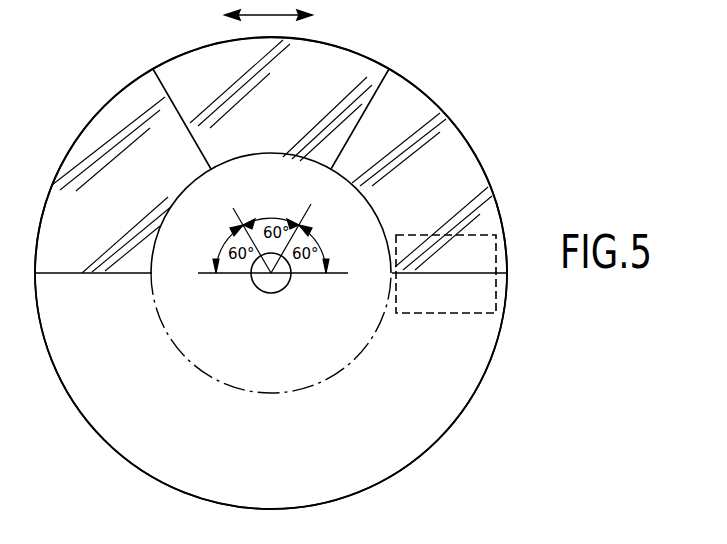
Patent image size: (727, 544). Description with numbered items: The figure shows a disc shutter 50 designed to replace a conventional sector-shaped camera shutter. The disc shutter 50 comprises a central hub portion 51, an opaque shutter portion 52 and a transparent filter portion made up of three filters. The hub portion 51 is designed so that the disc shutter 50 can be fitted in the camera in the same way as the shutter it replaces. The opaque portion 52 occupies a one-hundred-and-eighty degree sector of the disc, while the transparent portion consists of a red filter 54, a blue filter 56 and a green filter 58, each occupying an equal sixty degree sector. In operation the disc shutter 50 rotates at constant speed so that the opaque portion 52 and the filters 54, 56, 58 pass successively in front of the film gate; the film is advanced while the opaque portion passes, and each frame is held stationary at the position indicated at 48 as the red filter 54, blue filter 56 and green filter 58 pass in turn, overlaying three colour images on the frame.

The film frame position 48 is at (477, 233).
The disc shutter 50 is at (377, 468).
The hub portion 51 is at (232, 370).
The opaque shutter portion 52 is at (87, 392).
The red filter 54 is at (113, 110).
The blue filter 56 is at (348, 66).
The green filter 58 is at (406, 114).